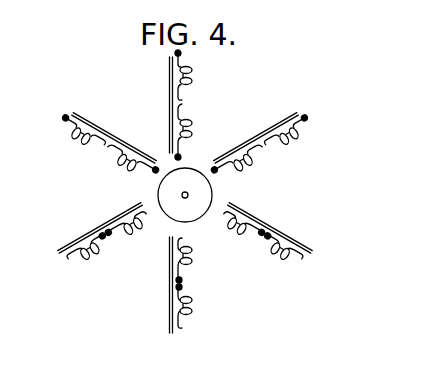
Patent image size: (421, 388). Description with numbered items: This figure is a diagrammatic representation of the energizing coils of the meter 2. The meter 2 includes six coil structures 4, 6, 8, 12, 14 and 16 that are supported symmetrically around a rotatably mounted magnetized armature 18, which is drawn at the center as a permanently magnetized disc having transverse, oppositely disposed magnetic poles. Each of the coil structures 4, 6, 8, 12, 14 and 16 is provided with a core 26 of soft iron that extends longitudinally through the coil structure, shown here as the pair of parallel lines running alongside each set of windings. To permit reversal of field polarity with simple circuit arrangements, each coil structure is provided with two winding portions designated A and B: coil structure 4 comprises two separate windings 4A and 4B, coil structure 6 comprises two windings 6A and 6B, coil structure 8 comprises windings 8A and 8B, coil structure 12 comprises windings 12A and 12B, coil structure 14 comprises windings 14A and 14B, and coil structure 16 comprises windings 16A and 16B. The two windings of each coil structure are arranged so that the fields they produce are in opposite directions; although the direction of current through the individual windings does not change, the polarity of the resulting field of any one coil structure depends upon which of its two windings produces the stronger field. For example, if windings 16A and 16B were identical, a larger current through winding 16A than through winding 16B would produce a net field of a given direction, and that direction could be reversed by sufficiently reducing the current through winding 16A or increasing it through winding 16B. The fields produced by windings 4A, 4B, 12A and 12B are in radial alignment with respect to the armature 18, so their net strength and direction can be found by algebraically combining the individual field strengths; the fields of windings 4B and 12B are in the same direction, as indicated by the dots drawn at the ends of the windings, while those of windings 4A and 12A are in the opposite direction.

The meter 2 is at (263, 78).
The coil structure 4 is at (204, 302).
The winding 4A is at (199, 329).
The winding 4B is at (193, 266).
The coil structure 6 is at (97, 258).
The winding 6A is at (81, 266).
The winding 6B is at (129, 238).
The coil structure 8 is at (90, 152).
The winding 8A is at (76, 142).
The winding 8B is at (118, 162).
The coil structure 12 is at (206, 105).
The winding 12A is at (191, 89).
The winding 12B is at (191, 126).
The coil structure 14 is at (283, 143).
The winding 14A is at (295, 136).
The winding 14B is at (245, 166).
The coil structure 16 is at (285, 253).
The winding 16A is at (281, 262).
The winding 16B is at (234, 233).
The magnetized armature 18 is at (158, 192).
The core 26 is at (170, 103).